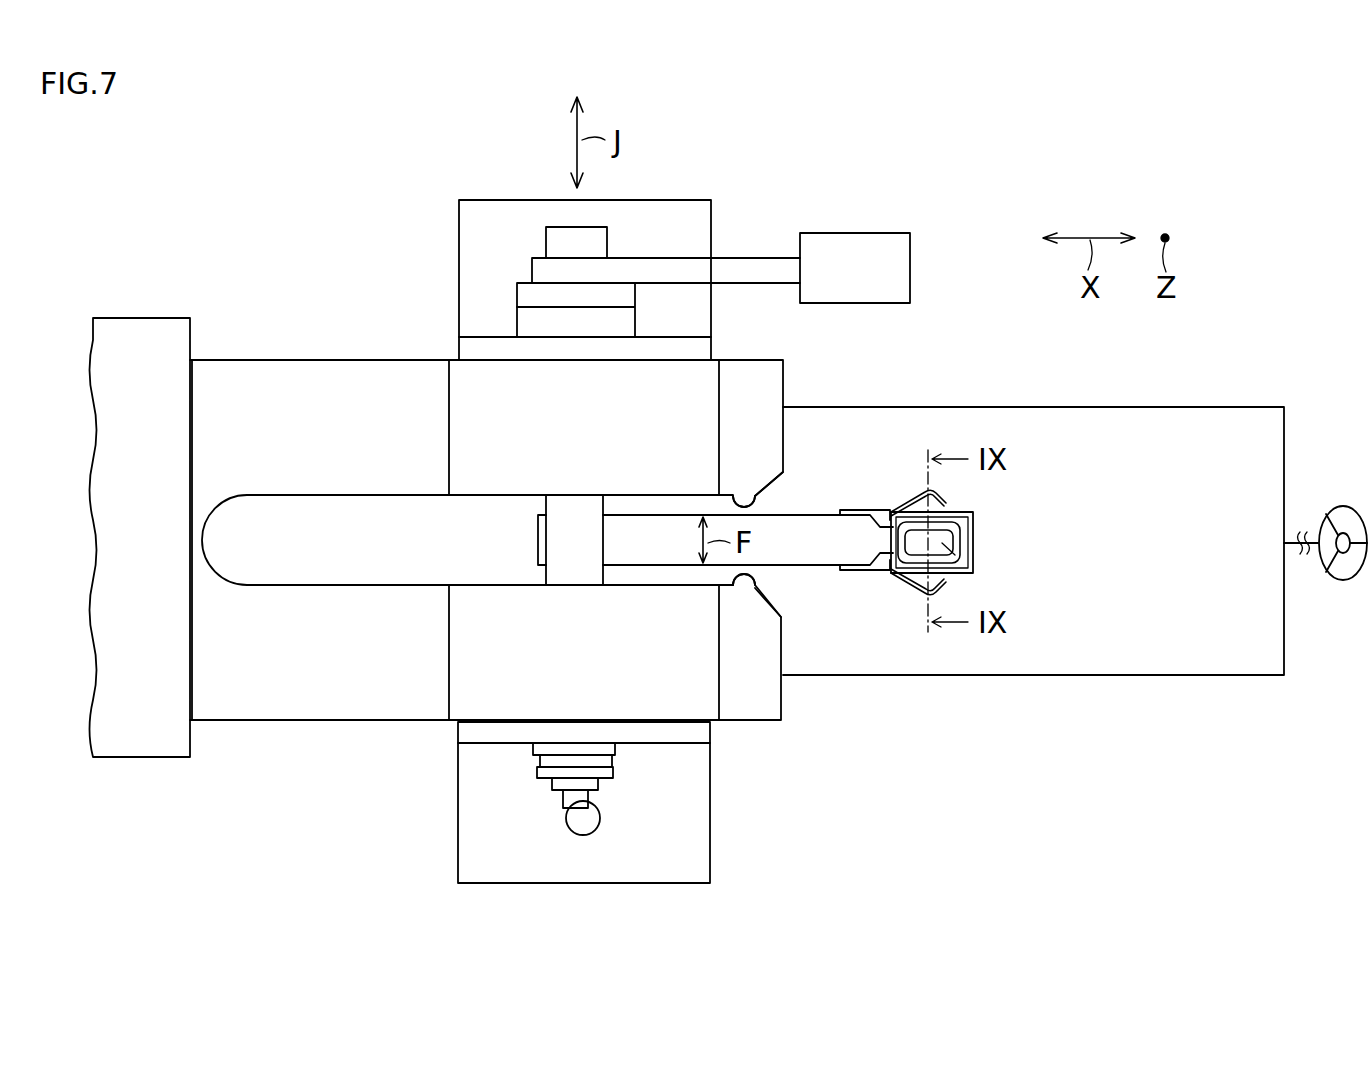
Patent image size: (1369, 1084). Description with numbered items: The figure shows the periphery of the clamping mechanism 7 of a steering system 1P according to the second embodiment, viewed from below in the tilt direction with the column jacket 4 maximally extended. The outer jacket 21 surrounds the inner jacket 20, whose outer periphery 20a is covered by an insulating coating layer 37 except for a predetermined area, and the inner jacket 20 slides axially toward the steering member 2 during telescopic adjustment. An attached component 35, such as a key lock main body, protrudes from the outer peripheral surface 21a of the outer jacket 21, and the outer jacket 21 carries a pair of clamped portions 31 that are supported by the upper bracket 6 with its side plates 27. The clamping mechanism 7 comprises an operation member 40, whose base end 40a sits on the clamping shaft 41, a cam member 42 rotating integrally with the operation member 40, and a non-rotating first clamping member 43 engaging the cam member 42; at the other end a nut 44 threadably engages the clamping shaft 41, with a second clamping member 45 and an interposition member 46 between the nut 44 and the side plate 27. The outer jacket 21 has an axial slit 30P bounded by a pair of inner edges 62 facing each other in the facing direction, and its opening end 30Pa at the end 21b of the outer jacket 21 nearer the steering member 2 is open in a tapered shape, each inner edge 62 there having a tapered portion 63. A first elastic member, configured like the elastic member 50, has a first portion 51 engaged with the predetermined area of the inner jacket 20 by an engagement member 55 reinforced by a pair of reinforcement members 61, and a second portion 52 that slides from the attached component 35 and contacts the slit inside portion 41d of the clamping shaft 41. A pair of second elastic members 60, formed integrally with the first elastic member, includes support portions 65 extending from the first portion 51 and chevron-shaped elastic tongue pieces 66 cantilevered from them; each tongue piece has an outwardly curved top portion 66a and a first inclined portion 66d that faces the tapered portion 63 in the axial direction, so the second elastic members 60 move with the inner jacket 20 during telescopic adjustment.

The steering system 1P is at (692, 938).
The steering member 2 is at (1343, 506).
The column jacket 4 is at (1200, 688).
The upper bracket 6 is at (448, 827).
The clamping mechanism 7 is at (528, 243).
The inner jacket 20 is at (1215, 420).
The outer periphery 20a is at (1075, 442).
The outer jacket 21 is at (328, 372).
The outer peripheral surface 21a is at (240, 382).
The end of the outer jacket 21b is at (770, 388).
The side plate 27 is at (695, 350).
The axial slit 30P is at (640, 497).
The opening end 30Pa is at (770, 505).
The clamped portion 31 is at (710, 700).
The attached component 35 is at (145, 325).
The coating layer 37 is at (960, 407).
The operation member 40 is at (910, 270).
The base end 40a is at (535, 271).
The clamping shaft 41 is at (612, 241).
The slit inside portion 41d is at (575, 504).
The cam member 42 is at (525, 296).
The first clamping member 43 is at (525, 322).
The nut 44 is at (600, 784).
The second clamping member 45 is at (615, 748).
The interposition member 46 is at (624, 776).
The elastic member 50 is at (665, 578).
The first portion 51 is at (975, 520).
The second portion 52 is at (538, 540).
The engagement member 55 is at (965, 556).
The second elastic member 60 is at (890, 512).
The reinforcement member 61 is at (986, 548).
The inner edge 62 is at (745, 490).
The tapered portion 63 is at (783, 492).
The support portion 65 is at (897, 510).
The elastic tongue piece 66 is at (959, 499).
The top portion 66a is at (930, 494).
The first inclined portion 66d is at (906, 506).